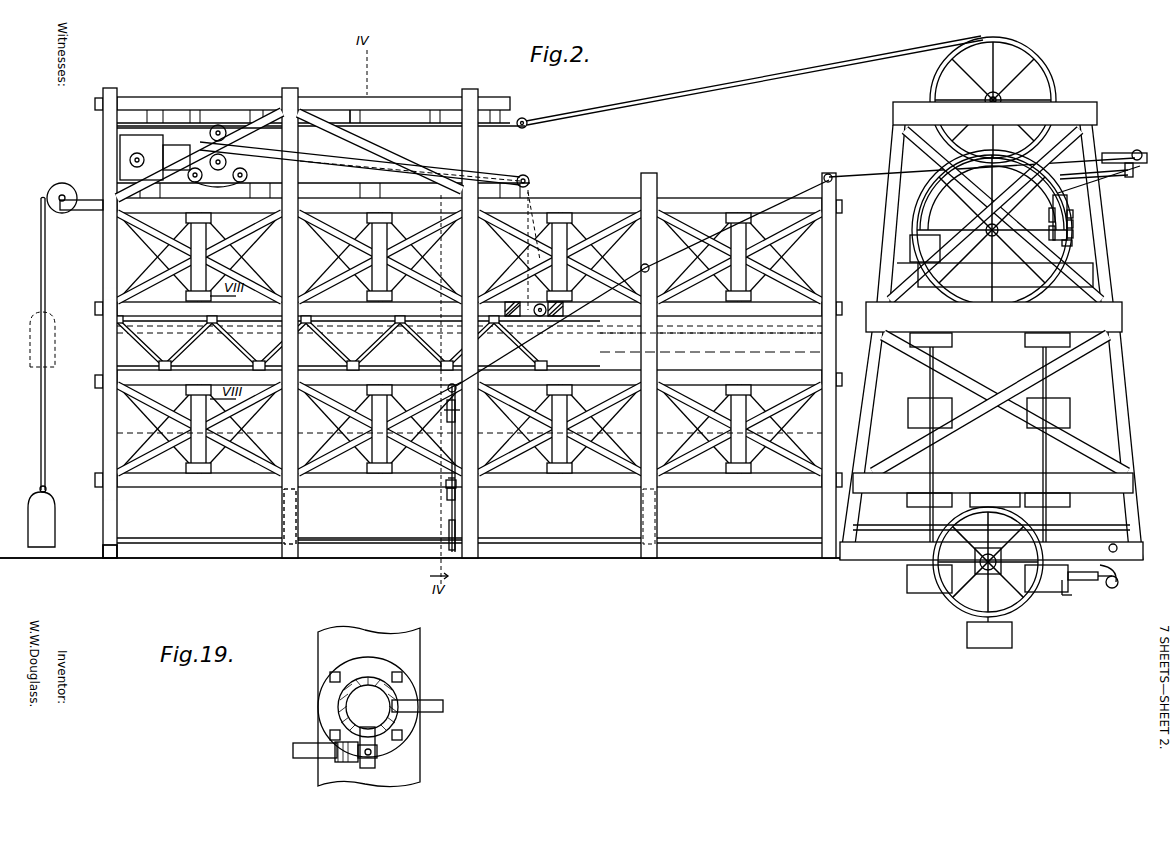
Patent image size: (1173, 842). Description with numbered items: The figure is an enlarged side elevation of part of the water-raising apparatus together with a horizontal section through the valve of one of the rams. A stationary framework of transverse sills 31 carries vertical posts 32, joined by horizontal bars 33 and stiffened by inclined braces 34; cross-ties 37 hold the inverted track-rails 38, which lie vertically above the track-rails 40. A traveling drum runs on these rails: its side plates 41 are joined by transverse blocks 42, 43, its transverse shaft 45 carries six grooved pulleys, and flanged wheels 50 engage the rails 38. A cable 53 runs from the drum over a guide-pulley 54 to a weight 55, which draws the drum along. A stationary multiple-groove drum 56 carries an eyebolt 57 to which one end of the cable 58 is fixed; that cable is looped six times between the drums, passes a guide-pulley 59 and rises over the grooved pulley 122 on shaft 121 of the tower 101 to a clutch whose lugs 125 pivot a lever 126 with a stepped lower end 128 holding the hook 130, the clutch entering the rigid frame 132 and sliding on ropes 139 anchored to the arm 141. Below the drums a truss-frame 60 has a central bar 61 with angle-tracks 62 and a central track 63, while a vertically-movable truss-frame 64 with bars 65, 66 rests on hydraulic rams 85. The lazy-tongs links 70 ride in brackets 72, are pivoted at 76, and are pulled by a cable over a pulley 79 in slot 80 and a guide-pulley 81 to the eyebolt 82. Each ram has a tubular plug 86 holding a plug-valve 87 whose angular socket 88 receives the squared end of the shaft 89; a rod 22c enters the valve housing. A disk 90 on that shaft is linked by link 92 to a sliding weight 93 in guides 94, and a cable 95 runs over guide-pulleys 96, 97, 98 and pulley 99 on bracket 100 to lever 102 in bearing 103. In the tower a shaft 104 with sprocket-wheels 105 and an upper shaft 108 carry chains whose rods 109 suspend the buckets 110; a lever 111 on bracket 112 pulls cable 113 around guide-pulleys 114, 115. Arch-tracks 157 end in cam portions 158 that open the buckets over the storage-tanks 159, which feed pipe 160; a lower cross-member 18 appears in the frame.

In FIG. 2, the rope 18 is at (530, 225).
In FIG. 19, the rod 22c is at (445, 707).
In FIG. 2, the transverse sill 31 is at (118, 556).
In FIG. 19, the transverse sill 31 is at (360, 630).
In FIG. 2, the vertical post 32 is at (93, 188).
In FIG. 2, the horizontal bar 33 is at (102, 412).
In FIG. 2, the inclined brace 34 is at (657, 176).
In FIG. 2, the cross-tie 37 is at (420, 118).
In FIG. 2, the inverted track-rail 38 is at (370, 118).
In FIG. 2, the track-rail 40 is at (488, 185).
In FIG. 2, the side plate 41 is at (228, 165).
In FIG. 2, the transverse block 42 is at (280, 152).
In FIG. 2, the transverse block 43 is at (240, 183).
In FIG. 2, the transverse shaft 45 is at (192, 180).
In FIG. 2, the flanged wheel 50 is at (222, 127).
In FIG. 2, the cable 53 is at (66, 185).
In FIG. 2, the guide-pulley 54 is at (62, 215).
In FIG. 2, the weight 55 is at (56, 512).
In FIG. 2, the multiple-groove drum 56 is at (125, 140).
In FIG. 2, the eyebolt 57 is at (175, 145).
In FIG. 2, the cable 58 is at (754, 80).
In FIG. 2, the guide-pulley 59 is at (527, 121).
In FIG. 2, the truss-frame 60 is at (380, 257).
In FIG. 2, the central longitudinally-extending bar 61 is at (320, 312).
In FIG. 2, the marginal angle-track 62 is at (748, 334).
In FIG. 2, the central track 63 is at (307, 324).
In FIG. 2, the vertically-movable truss-frame 64 is at (380, 429).
In FIG. 2, the central longitudinally-extending bar 65 is at (350, 487).
In FIG. 2, the bar 66 is at (688, 376).
In FIG. 2, the link 70 is at (228, 348).
In FIG. 2, the bracket 72 is at (752, 370).
In FIG. 2, the pivotal connection 76 is at (118, 322).
In FIG. 2, the pulley 79 is at (532, 310).
In FIG. 2, the slot 80 is at (568, 308).
In FIG. 2, the guide-pulley 81 is at (530, 181).
In FIG. 2, the eyebolt 82 is at (292, 118).
In FIG. 2, the hydraulic ram 85 is at (283, 515).
In FIG. 19, the hydraulic ram 85 is at (398, 694).
In FIG. 19, the tubular plug 86 is at (366, 770).
In FIG. 19, the rotary plug-valve 87 is at (378, 760).
In FIG. 19, the angular socket 88 is at (345, 764).
In FIG. 2, the horizontal shaft 89 is at (380, 530).
In FIG. 19, the horizontal shaft 89 is at (292, 751).
In FIG. 2, the disk 90 is at (448, 535).
In FIG. 2, the link 92 is at (457, 520).
In FIG. 2, the vertically-slidable weight 93 is at (456, 494).
In FIG. 2, the guide 94 is at (446, 484).
In FIG. 2, the cable 95 is at (440, 405).
In FIG. 2, the guide-pulley 96 is at (482, 388).
In FIG. 2, the guide-pulley 97 is at (642, 266).
In FIG. 2, the guide-pulley 98 is at (830, 175).
In FIG. 2, the pulley 99 is at (1138, 150).
In FIG. 2, the bracket 100 is at (1100, 128).
In FIG. 2, the tower 101 is at (1088, 100).
In FIG. 2, the lever 102 is at (1100, 180).
In FIG. 2, the bearing 103 is at (1110, 180).
In FIG. 2, the shaft 104 is at (948, 600).
In FIG. 2, the sprocket-wheel 105 is at (965, 610).
In FIG. 2, the shaft 108 is at (992, 233).
In FIG. 2, the horizontal rod 109 is at (928, 394).
In FIG. 2, the bucket 110 is at (912, 585).
In FIG. 2, the lever 111 is at (1085, 582).
In FIG. 2, the bracket 112 is at (1104, 590).
In FIG. 2, the cable 113 is at (886, 540).
In FIG. 2, the guide-pulley 114 is at (1112, 590).
In FIG. 2, the guide-pulley 115 is at (1113, 543).
In FIG. 2, the shaft 121 is at (990, 103).
In FIG. 2, the grooved pulley 122 is at (932, 74).
In FIG. 2, the lug 125 is at (1053, 206).
In FIG. 2, the lever 126 is at (1074, 222).
In FIG. 2, the stepped lower end 128 is at (1074, 232).
In FIG. 2, the hook 130 is at (1074, 244).
In FIG. 2, the rigid frame 132 is at (1074, 212).
In FIG. 2, the rope 139 is at (1050, 380).
In FIG. 2, the arm 141 is at (1064, 598).
In FIG. 2, the semicircular arch-track 157 is at (945, 195).
In FIG. 2, the cam portion 158 is at (915, 235).
In FIG. 2, the storage-tank 159 is at (1016, 290).
In FIG. 2, the pipe 160 is at (930, 290).